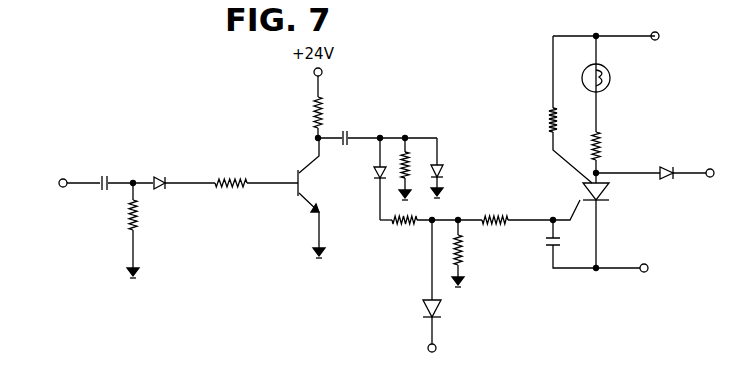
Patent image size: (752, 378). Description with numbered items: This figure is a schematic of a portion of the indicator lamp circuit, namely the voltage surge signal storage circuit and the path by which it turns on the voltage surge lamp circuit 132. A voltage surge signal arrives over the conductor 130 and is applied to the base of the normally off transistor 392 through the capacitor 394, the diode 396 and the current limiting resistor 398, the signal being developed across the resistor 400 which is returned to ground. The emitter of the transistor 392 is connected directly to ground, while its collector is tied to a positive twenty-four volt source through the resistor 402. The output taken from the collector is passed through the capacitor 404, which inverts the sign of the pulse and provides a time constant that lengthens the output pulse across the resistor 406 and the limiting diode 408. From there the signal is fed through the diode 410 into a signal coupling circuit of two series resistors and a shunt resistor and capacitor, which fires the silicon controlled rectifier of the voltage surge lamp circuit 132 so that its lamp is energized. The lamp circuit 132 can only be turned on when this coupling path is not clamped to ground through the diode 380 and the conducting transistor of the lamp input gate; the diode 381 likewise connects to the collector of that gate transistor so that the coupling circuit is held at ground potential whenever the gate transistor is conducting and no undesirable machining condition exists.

The conductor 130 is at (80, 185).
The voltage surge lamp circuit 132 is at (552, 77).
The diode 380 is at (603, 193).
The diode 381 is at (440, 305).
The transistor 392 is at (298, 196).
The capacitor 394 is at (100, 178).
The diode 396 is at (165, 178).
The current limiting resistor 398 is at (230, 192).
The resistor 400 is at (128, 222).
The resistor 402 is at (318, 103).
The capacitor 404 is at (342, 136).
The resistor 406 is at (407, 163).
The limiting diode 408 is at (442, 172).
The diode 410 is at (375, 173).